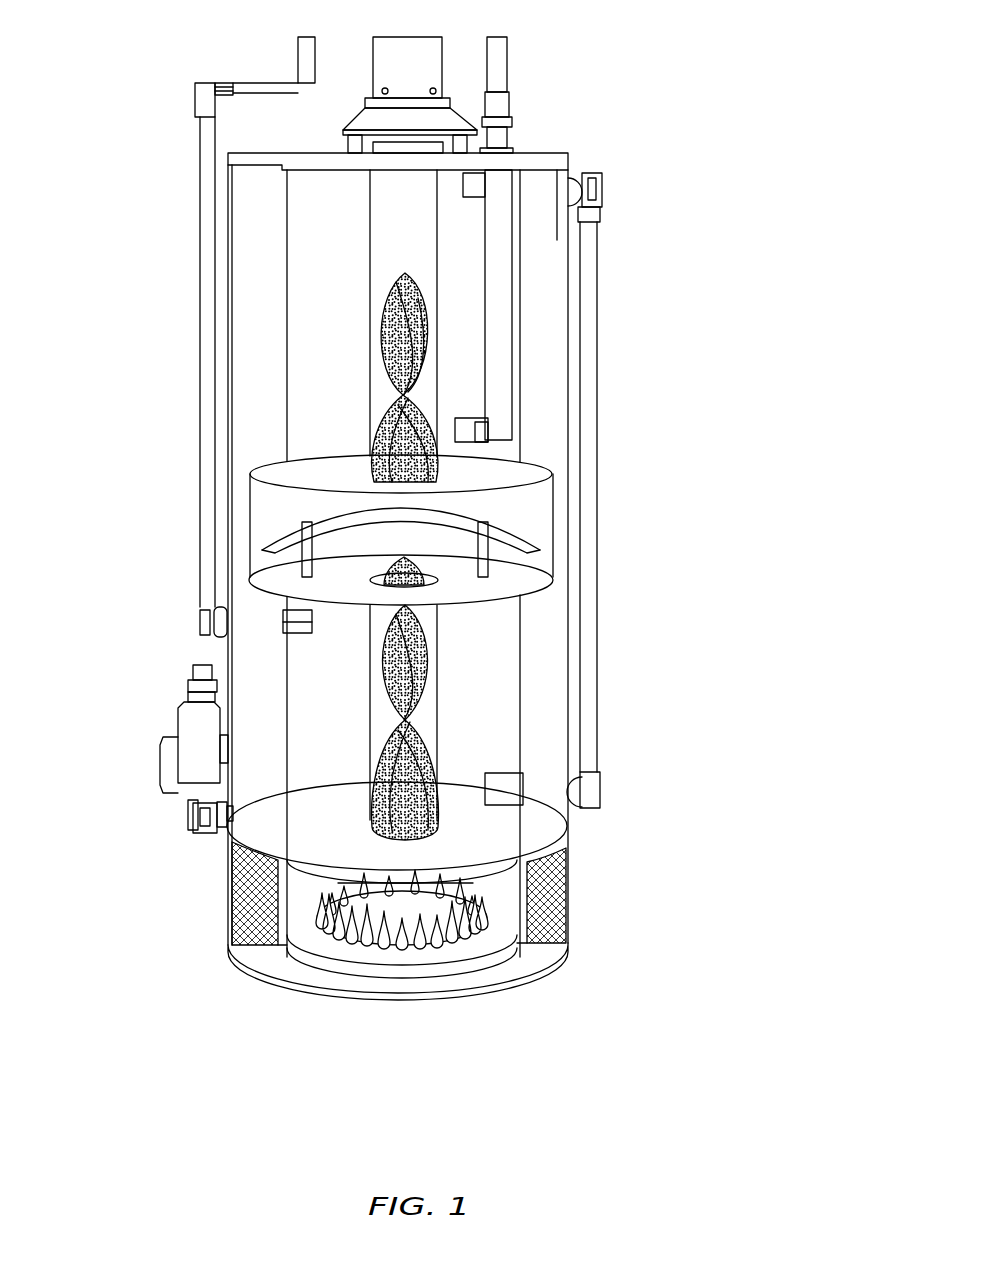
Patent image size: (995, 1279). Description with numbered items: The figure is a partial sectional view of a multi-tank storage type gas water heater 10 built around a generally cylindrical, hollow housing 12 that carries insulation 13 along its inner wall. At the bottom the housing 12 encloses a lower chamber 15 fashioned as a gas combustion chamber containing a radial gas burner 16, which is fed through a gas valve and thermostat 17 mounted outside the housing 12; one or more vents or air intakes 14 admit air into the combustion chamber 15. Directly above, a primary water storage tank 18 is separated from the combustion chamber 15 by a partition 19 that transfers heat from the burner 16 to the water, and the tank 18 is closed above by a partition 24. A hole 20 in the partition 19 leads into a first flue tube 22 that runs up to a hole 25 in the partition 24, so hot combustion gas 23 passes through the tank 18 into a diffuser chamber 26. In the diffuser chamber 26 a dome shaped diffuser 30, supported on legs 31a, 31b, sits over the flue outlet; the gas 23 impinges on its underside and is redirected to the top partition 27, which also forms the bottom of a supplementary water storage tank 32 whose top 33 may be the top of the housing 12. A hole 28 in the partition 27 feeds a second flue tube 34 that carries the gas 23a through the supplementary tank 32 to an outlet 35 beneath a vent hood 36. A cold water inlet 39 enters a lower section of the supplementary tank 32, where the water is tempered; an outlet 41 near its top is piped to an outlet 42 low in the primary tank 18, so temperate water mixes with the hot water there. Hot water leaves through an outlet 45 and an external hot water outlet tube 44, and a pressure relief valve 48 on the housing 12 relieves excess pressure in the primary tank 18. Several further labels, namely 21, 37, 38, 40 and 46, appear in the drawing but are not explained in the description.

The multi-tank storage type gas water heater 10 is at (690, 115).
The housing 12 is at (255, 333).
The insulation 13 is at (242, 493).
The vents or air intakes 14 is at (557, 898).
The lower chamber or compartment 15 is at (488, 948).
The radial gas burner 16 is at (360, 938).
The gas valve and thermostat 17 is at (192, 718).
The water storage tank 18 is at (505, 713).
The top wall or partition 19 is at (478, 843).
The hole or cutout 20 is at (335, 880).
The inner tank wall 21 is at (477, 682).
The first flue portion or tube 22 is at (440, 755).
The hot combustion gas or exhaust 23 is at (435, 640).
The hot combustion gas 23a is at (430, 325).
The top wall or partition 24 is at (528, 587).
The hole or cutout 25 is at (373, 580).
The diffuser chamber 26 is at (262, 520).
The upper wall or partition 27 is at (497, 478).
The hole or cutout 28 is at (380, 427).
The diffuser or baffle 30 is at (523, 550).
The leg or support 31a is at (300, 553).
The leg or support 31b is at (487, 560).
The supplementary water storage tank 32 is at (300, 286).
The top 33 is at (323, 165).
The second flue portion or tube 34 is at (370, 387).
The outlet 35 is at (445, 148).
The vent hood 36 is at (422, 78).
The upper chamber 37 is at (307, 230).
The conduit 38 is at (495, 308).
The cold water inlet 39 is at (481, 420).
The conduit 40 is at (590, 545).
The outlet 41 is at (483, 220).
The outlet 42 is at (512, 793).
The hot water outlet tube 44 is at (207, 415).
The outlet 45 is at (302, 636).
The duct 46 is at (543, 548).
The pressure relief valve 48 is at (193, 820).